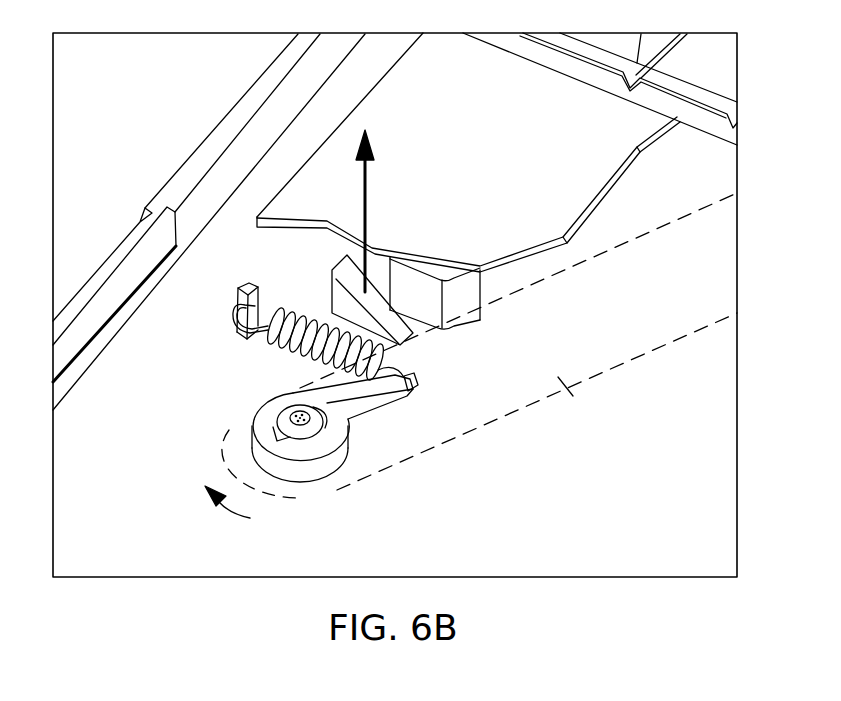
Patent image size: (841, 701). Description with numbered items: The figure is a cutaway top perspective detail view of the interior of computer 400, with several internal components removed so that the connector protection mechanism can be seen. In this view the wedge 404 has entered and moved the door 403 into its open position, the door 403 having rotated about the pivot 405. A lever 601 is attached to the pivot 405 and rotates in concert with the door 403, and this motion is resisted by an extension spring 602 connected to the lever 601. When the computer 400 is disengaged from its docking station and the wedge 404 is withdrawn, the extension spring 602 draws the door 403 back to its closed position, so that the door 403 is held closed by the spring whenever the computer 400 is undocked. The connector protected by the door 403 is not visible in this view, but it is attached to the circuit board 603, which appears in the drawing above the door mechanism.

The computer 400 is at (175, 128).
The door 403 is at (578, 401).
The wedge 404 is at (330, 272).
The pivot 405 is at (273, 428).
The lever 601 is at (367, 414).
The extension spring 602 is at (300, 362).
The circuit board 603 is at (478, 177).